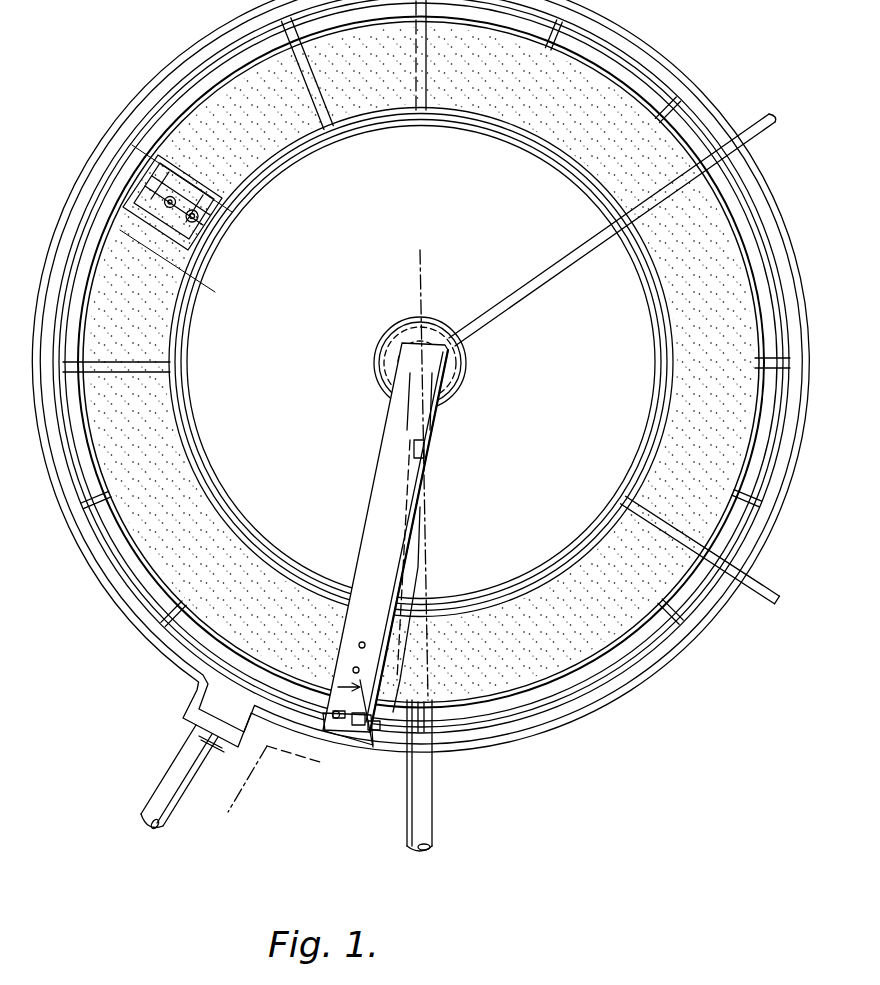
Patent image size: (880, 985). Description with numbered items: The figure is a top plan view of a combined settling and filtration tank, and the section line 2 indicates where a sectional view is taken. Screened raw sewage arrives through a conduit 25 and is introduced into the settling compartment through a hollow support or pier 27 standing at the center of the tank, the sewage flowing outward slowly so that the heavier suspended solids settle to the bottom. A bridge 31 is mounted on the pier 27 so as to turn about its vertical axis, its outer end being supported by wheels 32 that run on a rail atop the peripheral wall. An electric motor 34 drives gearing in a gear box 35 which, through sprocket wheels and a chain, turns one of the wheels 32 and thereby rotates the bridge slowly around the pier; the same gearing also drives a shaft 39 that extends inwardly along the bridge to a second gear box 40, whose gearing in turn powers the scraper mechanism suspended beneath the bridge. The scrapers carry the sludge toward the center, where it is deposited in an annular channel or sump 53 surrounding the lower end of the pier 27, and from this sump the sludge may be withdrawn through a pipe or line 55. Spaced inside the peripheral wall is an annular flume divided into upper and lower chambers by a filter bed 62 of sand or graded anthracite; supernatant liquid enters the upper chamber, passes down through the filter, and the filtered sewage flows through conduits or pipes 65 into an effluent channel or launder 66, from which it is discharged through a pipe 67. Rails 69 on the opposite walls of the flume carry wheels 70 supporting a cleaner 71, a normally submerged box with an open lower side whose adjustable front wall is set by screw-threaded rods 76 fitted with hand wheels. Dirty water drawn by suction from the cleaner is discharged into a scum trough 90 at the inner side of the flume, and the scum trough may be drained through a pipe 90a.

The section line 2- 2 is at (438, 269).
The conduit 25 is at (430, 475).
The hollow support or pier 27 is at (410, 375).
The bridge 31 is at (372, 500).
The wheels 32 is at (312, 717).
The electric motor 34 is at (330, 720).
The gear box 35 is at (343, 727).
The shaft 39 is at (401, 575).
The gear box 40 is at (412, 452).
The annular channel or sump 53 is at (452, 375).
The pipe or line 55 is at (510, 304).
The filter bed 62 is at (212, 540).
The conduits or pipes 65 is at (560, 42).
The effluent channel or launder 66 is at (583, 708).
The pipe 67 is at (177, 803).
The rails 69 is at (97, 480).
The wheels 70 is at (153, 137).
The cleaner 71 is at (153, 217).
The rods 76 is at (210, 210).
The scum trough 90 is at (603, 530).
The pipe 90a is at (773, 600).